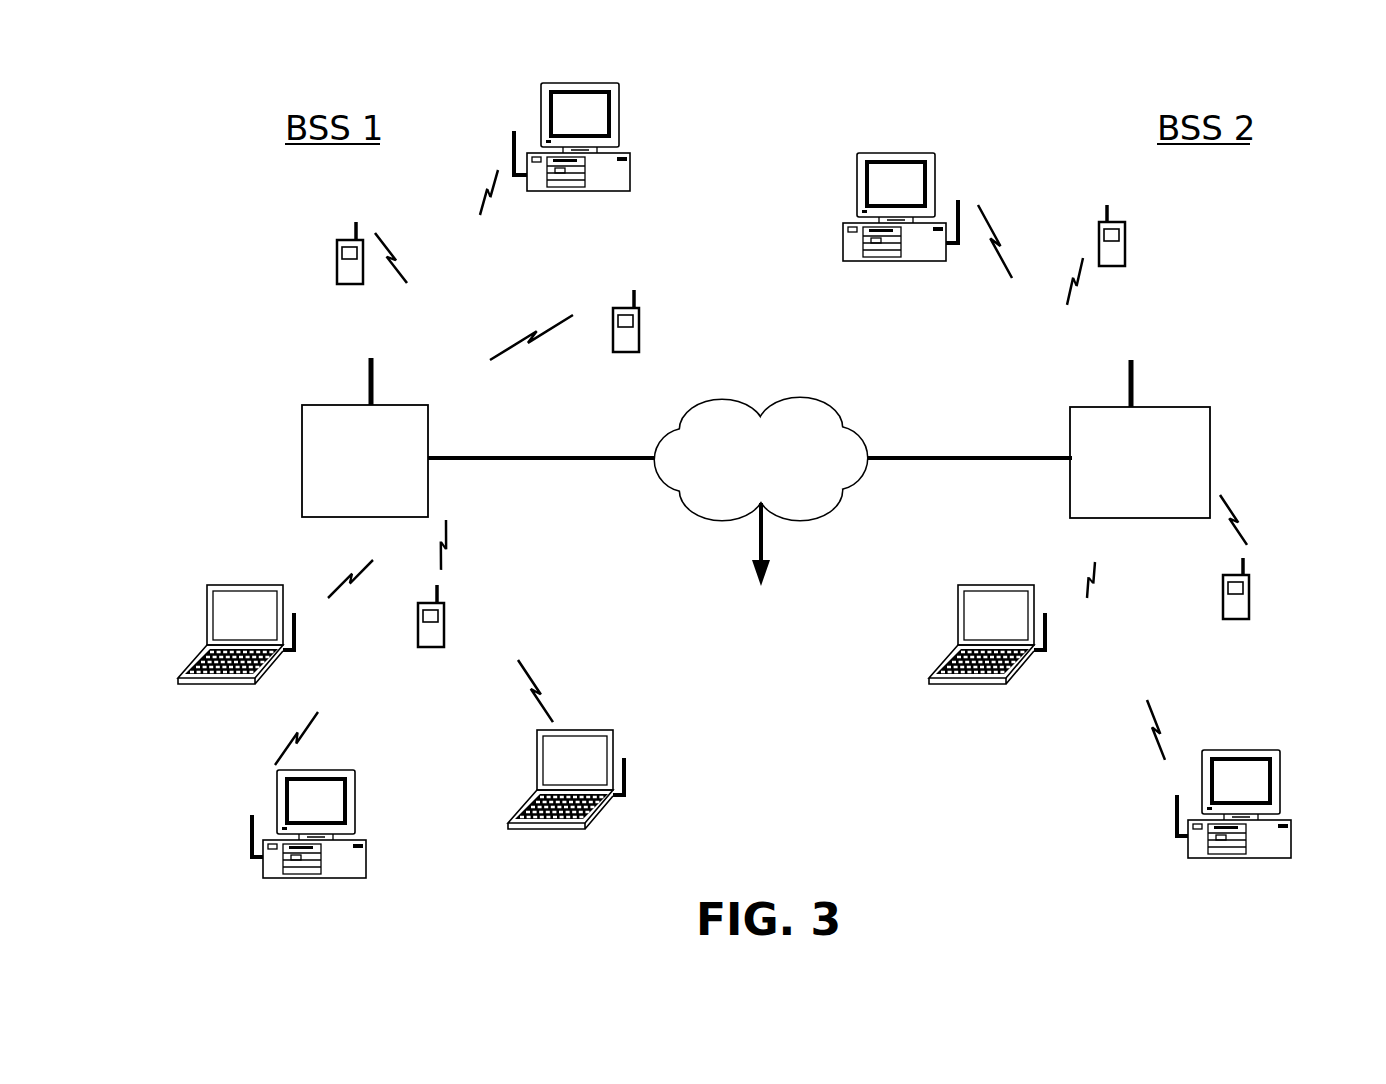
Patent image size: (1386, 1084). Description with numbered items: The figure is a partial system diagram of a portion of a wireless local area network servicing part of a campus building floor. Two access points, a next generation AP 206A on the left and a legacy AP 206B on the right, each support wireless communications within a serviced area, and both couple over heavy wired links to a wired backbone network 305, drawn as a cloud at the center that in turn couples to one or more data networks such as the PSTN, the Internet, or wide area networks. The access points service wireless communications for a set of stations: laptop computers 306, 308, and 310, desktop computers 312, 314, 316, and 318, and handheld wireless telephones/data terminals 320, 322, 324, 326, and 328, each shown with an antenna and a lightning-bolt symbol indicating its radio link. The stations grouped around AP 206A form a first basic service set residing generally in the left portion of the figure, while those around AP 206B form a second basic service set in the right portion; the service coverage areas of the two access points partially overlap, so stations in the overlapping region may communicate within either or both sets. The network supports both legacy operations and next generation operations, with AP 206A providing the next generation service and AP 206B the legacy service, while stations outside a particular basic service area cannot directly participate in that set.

The access point 206A is at (328, 405).
The access point 206B is at (1168, 407).
The wired backbone network 305 is at (826, 410).
The laptop computer 306 is at (258, 585).
The laptop computer 308 is at (582, 730).
The laptop computer 310 is at (1008, 585).
The desktop computer 312 is at (322, 770).
The desktop computer 314 is at (1228, 750).
The desktop computer 316 is at (588, 83).
The desktop computer 318 is at (908, 153).
The wireless telephone/data terminal 320 is at (443, 636).
The wireless telephone/data terminal 322 is at (337, 272).
The wireless telephone/data terminal 324 is at (640, 340).
The wireless telephone/data terminal 326 is at (1125, 256).
The wireless telephone/data terminal 328 is at (1250, 608).